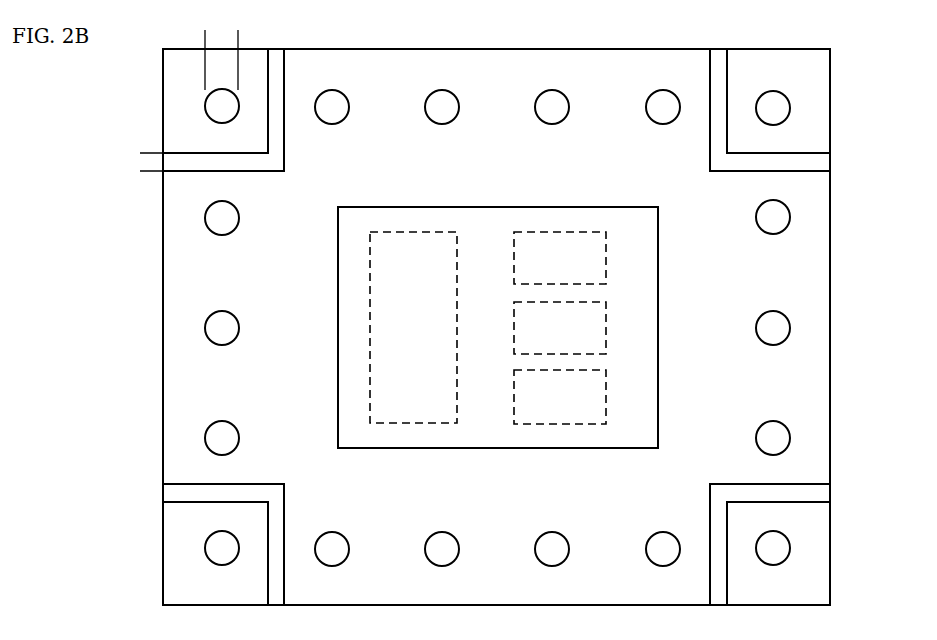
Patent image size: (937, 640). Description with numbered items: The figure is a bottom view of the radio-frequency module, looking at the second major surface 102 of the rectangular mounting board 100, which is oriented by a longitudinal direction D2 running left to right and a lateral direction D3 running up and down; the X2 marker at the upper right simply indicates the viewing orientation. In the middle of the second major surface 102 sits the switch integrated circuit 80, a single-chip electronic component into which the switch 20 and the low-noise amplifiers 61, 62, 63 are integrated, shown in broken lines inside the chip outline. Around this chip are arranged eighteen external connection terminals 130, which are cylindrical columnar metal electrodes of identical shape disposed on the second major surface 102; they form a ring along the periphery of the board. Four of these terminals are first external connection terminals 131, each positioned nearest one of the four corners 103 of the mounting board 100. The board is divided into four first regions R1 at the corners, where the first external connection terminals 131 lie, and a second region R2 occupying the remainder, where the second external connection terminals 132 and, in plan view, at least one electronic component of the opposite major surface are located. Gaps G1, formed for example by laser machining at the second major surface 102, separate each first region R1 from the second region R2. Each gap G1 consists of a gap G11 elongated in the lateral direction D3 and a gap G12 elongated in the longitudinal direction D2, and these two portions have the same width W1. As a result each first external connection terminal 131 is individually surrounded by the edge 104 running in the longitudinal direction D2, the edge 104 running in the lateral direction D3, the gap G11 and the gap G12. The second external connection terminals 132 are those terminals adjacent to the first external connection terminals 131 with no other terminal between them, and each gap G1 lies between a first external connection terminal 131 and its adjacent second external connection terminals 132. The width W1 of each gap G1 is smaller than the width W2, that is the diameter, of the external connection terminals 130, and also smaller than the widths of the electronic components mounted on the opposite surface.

The mounting board 100 is at (638, 70).
The second major surface 102 is at (578, 65).
The corners 103 is at (168, 0).
The edges 104 is at (163, 563).
The external connection terminals 130 is at (499, 327).
The first external connection terminals 131 is at (222, 117).
The second external connection terminals 132 is at (342, 108).
The switch integrated circuit 80 is at (474, 207).
The switch 20 is at (442, 332).
The low-noise amplifier 61 is at (594, 252).
The low-noise amplifier 62 is at (594, 330).
The low-noise amplifier 63 is at (594, 398).
The first regions R1 is at (178, 108).
The second region R2 is at (415, 65).
The gaps G1 is at (285, 71).
The gap G11 is at (278, 127).
The gap G12 is at (217, 162).
The width of gap W1 is at (145, 120).
The width of external connection terminals W2 is at (273, 33).
The longitudinal direction D2 is at (531, 33).
The lateral direction D3 is at (862, 292).
The axis X2 is at (773, 0).